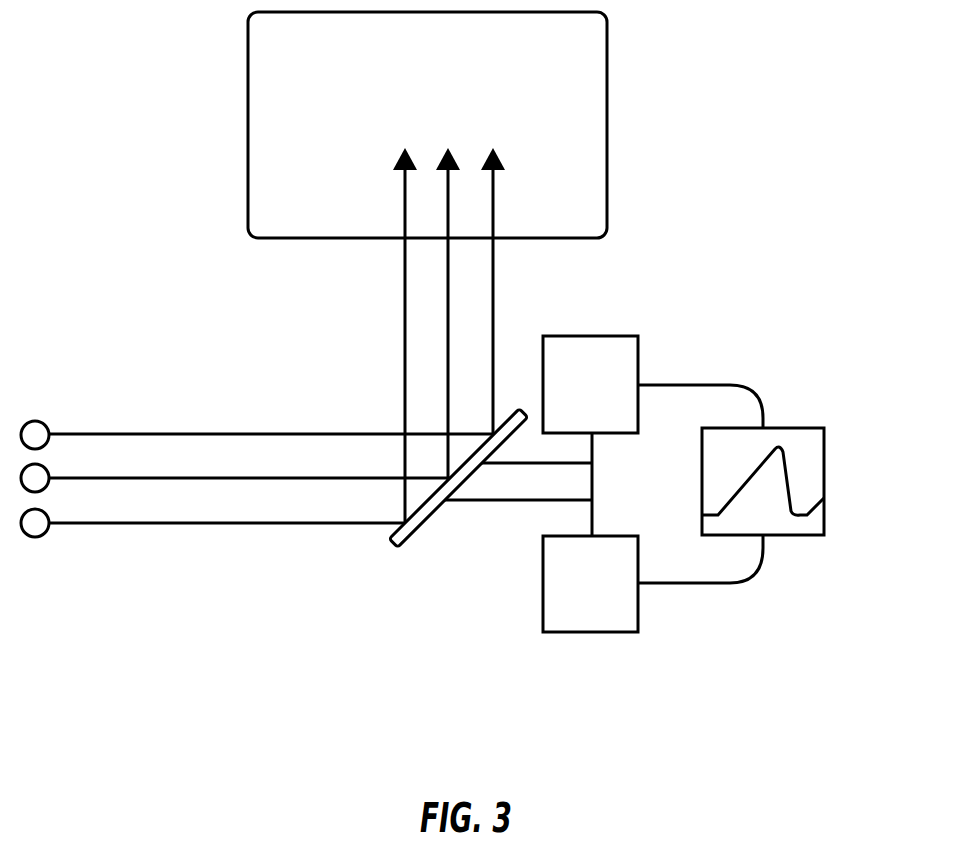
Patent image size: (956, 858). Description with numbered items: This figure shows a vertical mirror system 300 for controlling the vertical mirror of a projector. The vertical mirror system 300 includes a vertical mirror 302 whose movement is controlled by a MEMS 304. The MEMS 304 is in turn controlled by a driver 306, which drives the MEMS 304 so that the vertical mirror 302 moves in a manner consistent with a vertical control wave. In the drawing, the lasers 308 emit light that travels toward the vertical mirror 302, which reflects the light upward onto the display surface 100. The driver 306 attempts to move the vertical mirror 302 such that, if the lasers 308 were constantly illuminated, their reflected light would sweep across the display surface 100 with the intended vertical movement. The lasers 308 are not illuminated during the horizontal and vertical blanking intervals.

The display surface 100 is at (607, 88).
The vertical mirror system 300 is at (683, 232).
The vertical mirror 302 is at (420, 527).
The MEMS 304 is at (740, 307).
The driver 306 is at (803, 535).
The lasers 308 is at (30, 423).